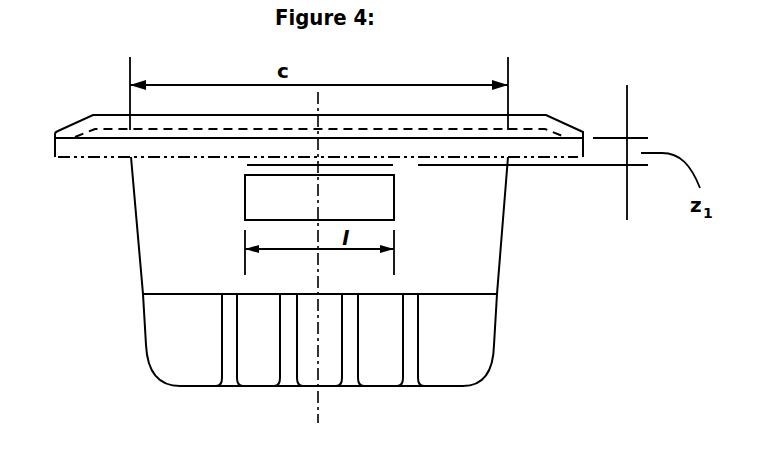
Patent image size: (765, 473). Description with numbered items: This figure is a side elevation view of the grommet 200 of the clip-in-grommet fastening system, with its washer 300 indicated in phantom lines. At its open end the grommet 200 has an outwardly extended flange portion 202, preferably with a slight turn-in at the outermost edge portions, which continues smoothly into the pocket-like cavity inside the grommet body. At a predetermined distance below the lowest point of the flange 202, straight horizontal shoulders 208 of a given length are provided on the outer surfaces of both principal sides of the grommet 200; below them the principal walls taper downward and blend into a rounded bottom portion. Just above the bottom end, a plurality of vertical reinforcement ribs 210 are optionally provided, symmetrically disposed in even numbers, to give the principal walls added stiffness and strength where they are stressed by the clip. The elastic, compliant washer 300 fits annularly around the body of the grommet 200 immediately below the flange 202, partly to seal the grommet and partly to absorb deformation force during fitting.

The grommet 200 is at (523, 309).
The flange portion 202 is at (108, 122).
The shoulders 208 is at (245, 163).
The reinforcement ribs 210 is at (222, 328).
The washer 300 is at (98, 160).